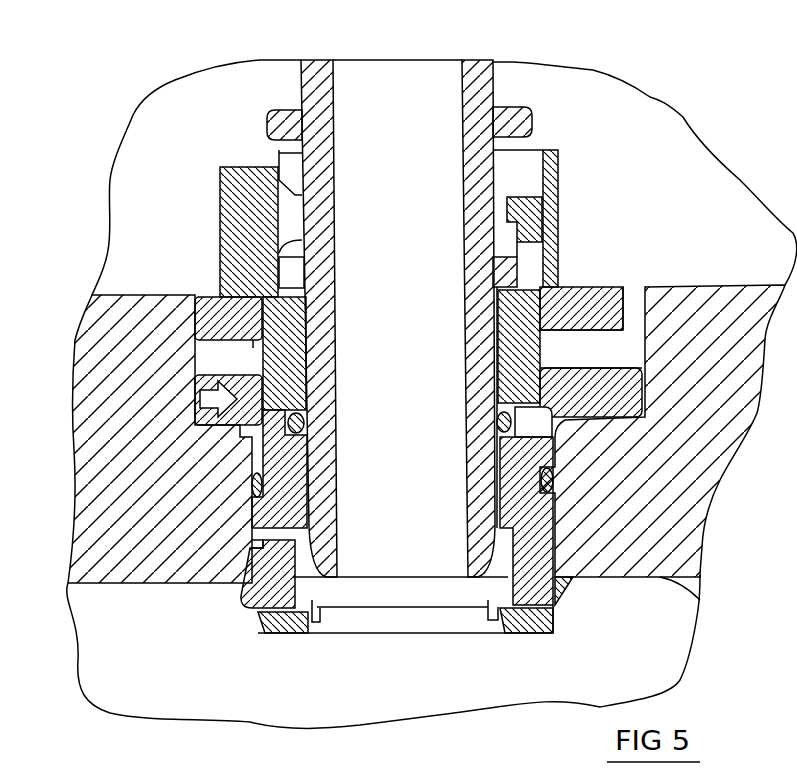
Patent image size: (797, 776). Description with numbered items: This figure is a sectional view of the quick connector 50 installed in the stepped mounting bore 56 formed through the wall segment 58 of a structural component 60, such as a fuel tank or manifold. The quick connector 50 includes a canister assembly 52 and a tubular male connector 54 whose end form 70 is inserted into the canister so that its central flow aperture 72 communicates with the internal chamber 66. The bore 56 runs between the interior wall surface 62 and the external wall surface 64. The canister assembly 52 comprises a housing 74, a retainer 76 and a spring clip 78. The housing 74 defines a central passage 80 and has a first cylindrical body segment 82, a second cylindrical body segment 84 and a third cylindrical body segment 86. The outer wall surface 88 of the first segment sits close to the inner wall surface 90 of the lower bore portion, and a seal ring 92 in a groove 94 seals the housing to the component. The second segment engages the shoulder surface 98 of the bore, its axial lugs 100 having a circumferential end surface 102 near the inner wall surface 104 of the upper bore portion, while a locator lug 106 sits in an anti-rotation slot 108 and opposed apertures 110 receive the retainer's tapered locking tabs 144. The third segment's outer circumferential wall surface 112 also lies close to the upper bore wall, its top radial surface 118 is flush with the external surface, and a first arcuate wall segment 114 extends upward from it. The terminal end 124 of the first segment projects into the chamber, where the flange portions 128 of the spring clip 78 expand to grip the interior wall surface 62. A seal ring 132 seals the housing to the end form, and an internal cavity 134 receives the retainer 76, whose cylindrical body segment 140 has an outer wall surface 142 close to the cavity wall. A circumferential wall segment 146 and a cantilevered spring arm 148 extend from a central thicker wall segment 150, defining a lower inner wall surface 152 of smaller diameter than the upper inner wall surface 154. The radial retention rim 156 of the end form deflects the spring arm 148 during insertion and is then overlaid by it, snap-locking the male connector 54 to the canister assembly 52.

The quick connector 50 is at (628, 203).
The canister assembly 52 is at (190, 268).
The tubular male connector 54 is at (500, 86).
The stepped mounting bore 56 is at (623, 290).
The wall segment 58 is at (83, 484).
The structural component 60 is at (710, 280).
The interior wall surface 62 is at (700, 590).
The external wall surface 64 is at (113, 283).
The internal chamber 66 is at (322, 708).
The end form 70 is at (312, 532).
The central flow aperture 72 is at (338, 462).
The housing 74 is at (553, 509).
The retainer 76 is at (212, 178).
The spring clip 78 is at (222, 613).
The central passage 80 is at (500, 462).
The first cylindrical body segment 82 is at (260, 518).
The second cylindrical body segment 84 is at (235, 440).
The third cylindrical body segment 86 is at (594, 292).
The outer wall surface 88 is at (247, 478).
The inner wall surface 90 is at (266, 543).
The seal ring 92 is at (553, 470).
The groove 94 is at (570, 422).
The shoulder surface 98 is at (227, 399).
The axial lugs 100 is at (195, 413).
The circumferential end surface 102 is at (197, 395).
The inner wall surface 104 is at (210, 355).
The locator lug 106 is at (637, 397).
The anti-rotation slot 108 is at (636, 322).
The apertures 110 is at (222, 363).
The outer circumferential wall surface 112 is at (195, 313).
The first arcuate wall segment 114 is at (553, 172).
The top radial surface 118 is at (568, 288).
The terminal end 124 is at (523, 633).
The flange portions 128 is at (243, 611).
The seal ring 132 is at (308, 418).
The internal cavity 134 is at (282, 397).
The cylindrical body segment 140 is at (293, 387).
The outer wall surface 142 is at (543, 378).
The tapered locking tabs 144 is at (200, 297).
The circumferential wall segment 146 is at (243, 183).
The cantilevered spring arm 148 is at (528, 213).
The central thicker wall segment 150 is at (531, 260).
The lower inner wall surface 152 is at (493, 347).
The upper inner wall surface 154 is at (281, 217).
The radial retention rim 156 is at (290, 268).